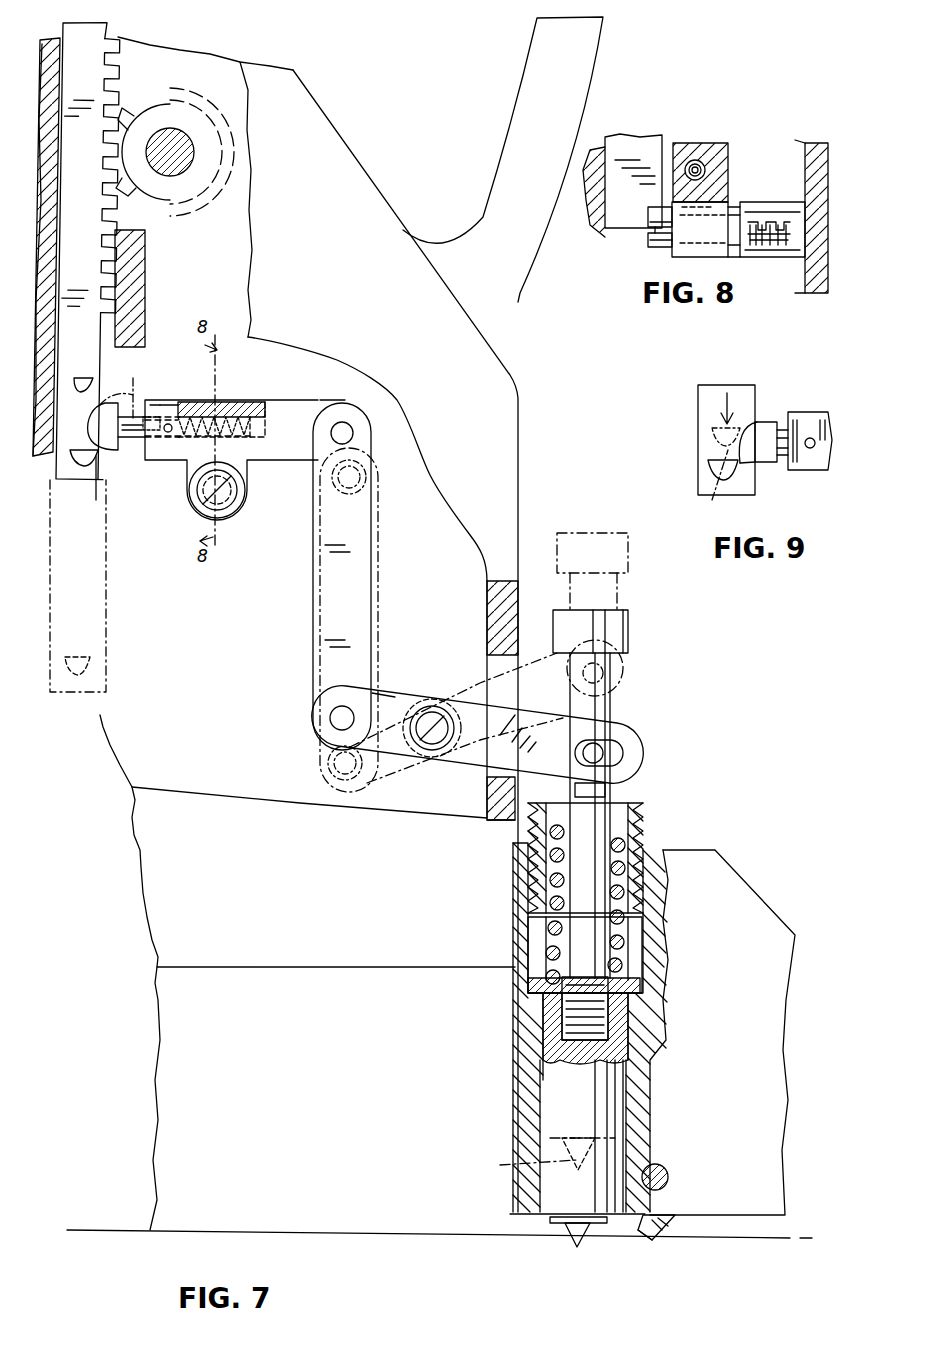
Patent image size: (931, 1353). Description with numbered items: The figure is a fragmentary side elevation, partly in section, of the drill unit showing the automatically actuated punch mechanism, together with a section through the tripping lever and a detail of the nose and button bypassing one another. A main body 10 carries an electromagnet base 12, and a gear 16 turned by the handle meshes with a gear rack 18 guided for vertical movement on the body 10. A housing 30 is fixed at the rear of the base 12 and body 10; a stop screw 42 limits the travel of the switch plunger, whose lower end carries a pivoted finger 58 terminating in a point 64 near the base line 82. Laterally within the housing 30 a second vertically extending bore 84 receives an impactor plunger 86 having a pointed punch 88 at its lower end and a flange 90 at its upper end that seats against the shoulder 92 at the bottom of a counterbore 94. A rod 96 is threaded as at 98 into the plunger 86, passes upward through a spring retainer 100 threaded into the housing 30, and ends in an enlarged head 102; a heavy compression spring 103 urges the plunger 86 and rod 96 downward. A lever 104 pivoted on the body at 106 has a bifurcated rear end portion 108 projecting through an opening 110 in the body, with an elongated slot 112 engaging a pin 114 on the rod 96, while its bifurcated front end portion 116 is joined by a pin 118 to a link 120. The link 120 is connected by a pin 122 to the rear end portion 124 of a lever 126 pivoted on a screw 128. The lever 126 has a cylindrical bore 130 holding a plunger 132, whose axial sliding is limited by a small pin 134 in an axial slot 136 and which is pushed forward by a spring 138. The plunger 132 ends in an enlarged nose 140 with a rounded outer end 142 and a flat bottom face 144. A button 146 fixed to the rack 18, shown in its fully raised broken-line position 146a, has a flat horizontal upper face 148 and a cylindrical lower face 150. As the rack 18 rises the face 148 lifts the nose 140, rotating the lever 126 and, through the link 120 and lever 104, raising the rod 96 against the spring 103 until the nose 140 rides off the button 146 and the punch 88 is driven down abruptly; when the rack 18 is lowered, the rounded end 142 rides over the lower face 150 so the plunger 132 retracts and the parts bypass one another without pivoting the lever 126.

In FIG. 7, the main body 10 is at (243, 784).
In FIG. 8, the main body 10 is at (840, 227).
In FIG. 7, the electromagnet base 12 is at (356, 1242).
In FIG. 7, the gear 16 is at (188, 210).
In FIG. 7, the gear rack 18 is at (107, 36).
In FIG. 8, the gear rack 18 is at (648, 135).
In FIG. 7, the housing 30 is at (728, 873).
In FIG. 7, the stop screw 42 is at (664, 1170).
In FIG. 7, the finger 58 is at (670, 1220).
In FIG. 7, the point 64 is at (654, 1240).
In FIG. 7, the base line 82 is at (740, 1245).
In FIG. 7, the second vertically extending bore 84 is at (626, 1083).
In FIG. 7, the impactor plunger 86 is at (548, 1215).
In FIG. 7, the pointed punch 88 is at (600, 1260).
In FIG. 7, the flange 90 is at (642, 985).
In FIG. 7, the shoulder 92 is at (668, 1018).
In FIG. 7, the counterbore 94 is at (643, 940).
In FIG. 7, the rod 96 is at (612, 797).
In FIG. 7, the threads 98 is at (570, 1010).
In FIG. 7, the spring retainer 100 is at (645, 815).
In FIG. 7, the enlarged head 102 is at (628, 632).
In FIG. 7, the heavy compression spring 103 is at (627, 895).
In FIG. 7, the lever 104 is at (468, 772).
In FIG. 7, the pivot 106 is at (436, 712).
In FIG. 7, the bifurcated rear end portion 108 is at (640, 745).
In FIG. 7, the opening 110 is at (487, 651).
In FIG. 7, the elongated slot 112 is at (620, 755).
In FIG. 7, the pin 114 is at (602, 745).
In FIG. 7, the bifurcated front end portion 116 is at (378, 700).
In FIG. 7, the pin 118 is at (330, 718).
In FIG. 7, the link 120 is at (370, 555).
In FIG. 7, the pin 122 is at (355, 428).
In FIG. 7, the rear end portion 124 is at (318, 400).
In FIG. 7, the lever 126 is at (296, 468).
In FIG. 8, the lever 126 is at (720, 257).
In FIG. 9, the lever 126 is at (830, 430).
In FIG. 7, the screw 128 is at (236, 505).
In FIG. 8, the screw 128 is at (655, 245).
In FIG. 7, the cylindrical bore 130 is at (270, 408).
In FIG. 7, the plunger 132 is at (160, 410).
In FIG. 8, the plunger 132 is at (704, 168).
In FIG. 7, the small pin 134 is at (180, 404).
In FIG. 7, the axial slot 136 is at (160, 402).
In FIG. 7, the spring 138 is at (240, 404).
In FIG. 8, the spring 138 is at (708, 176).
In FIG. 7, the enlarged nose 140 is at (128, 448).
In FIG. 8, the enlarged nose 140 is at (700, 158).
In FIG. 9, the enlarged nose 140 is at (770, 466).
In FIG. 7, the rounded outer end 142 is at (92, 450).
In FIG. 9, the rounded outer end 142 is at (757, 422).
In FIG. 9, the flat bottom face 144 is at (765, 468).
In FIG. 7, the button 146 is at (104, 464).
In FIG. 8, the button 146 is at (672, 200).
In FIG. 9, the button 146 is at (715, 470).
In FIG. 7, the button position 146a is at (83, 376).
In FIG. 9, the flat horizontal upper face 148 is at (708, 464).
In FIG. 7, the cylindrical lower face 150 is at (96, 478).
In FIG. 9, the cylindrical lower face 150 is at (714, 498).